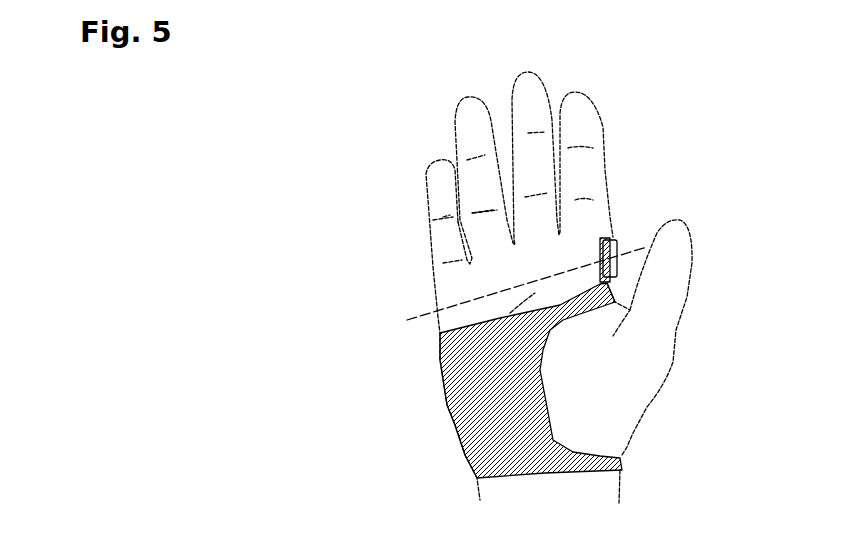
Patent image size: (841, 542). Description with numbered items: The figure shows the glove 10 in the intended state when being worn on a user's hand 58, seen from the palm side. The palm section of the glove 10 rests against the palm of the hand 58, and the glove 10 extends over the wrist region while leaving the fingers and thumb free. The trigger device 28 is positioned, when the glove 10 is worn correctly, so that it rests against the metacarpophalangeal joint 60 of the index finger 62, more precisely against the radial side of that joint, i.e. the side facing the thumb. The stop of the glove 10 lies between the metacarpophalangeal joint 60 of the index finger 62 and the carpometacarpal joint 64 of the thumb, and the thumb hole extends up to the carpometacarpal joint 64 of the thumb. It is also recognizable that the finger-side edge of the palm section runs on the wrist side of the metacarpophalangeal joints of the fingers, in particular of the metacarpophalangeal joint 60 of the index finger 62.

The glove 10 is at (458, 432).
The trigger device 28 is at (620, 240).
The hand 58 is at (445, 245).
The metacarpophalangeal joint 60 is at (583, 258).
The index finger 62 is at (593, 134).
The carpometacarpal joint 64 is at (603, 417).